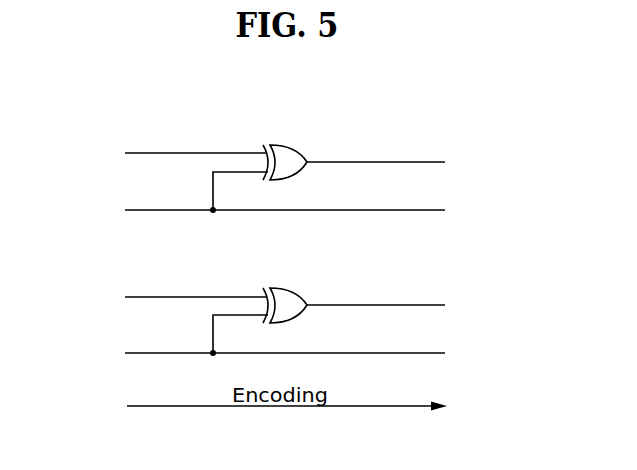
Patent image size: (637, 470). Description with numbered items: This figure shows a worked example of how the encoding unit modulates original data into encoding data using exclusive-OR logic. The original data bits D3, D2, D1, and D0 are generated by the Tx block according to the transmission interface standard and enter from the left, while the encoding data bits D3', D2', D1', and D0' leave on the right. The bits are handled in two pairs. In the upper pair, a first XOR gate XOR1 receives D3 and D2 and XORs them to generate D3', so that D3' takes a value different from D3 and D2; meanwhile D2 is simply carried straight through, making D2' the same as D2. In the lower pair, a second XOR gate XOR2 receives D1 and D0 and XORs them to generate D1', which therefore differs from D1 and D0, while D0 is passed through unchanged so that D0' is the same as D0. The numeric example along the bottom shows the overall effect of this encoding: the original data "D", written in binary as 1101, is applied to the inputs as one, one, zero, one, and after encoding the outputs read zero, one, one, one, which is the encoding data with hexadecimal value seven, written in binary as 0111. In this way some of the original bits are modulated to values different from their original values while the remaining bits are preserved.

The original data bit D3 is at (185, 146).
The original data bit D2 is at (185, 196).
The original data bit D1 is at (185, 290).
The original data bit D0 is at (185, 339).
The encoding data bit D3' is at (386, 155).
The encoding data bit D2' is at (339, 203).
The encoding data bit D1' is at (386, 298).
The encoding data bit D0' is at (339, 346).
The first XOR gate XOR1 is at (285, 162).
The second XOR gate XOR2 is at (285, 305).
The original data "D" 1101 is at (164, 408).
The encoding data "7" 0111 is at (411, 408).